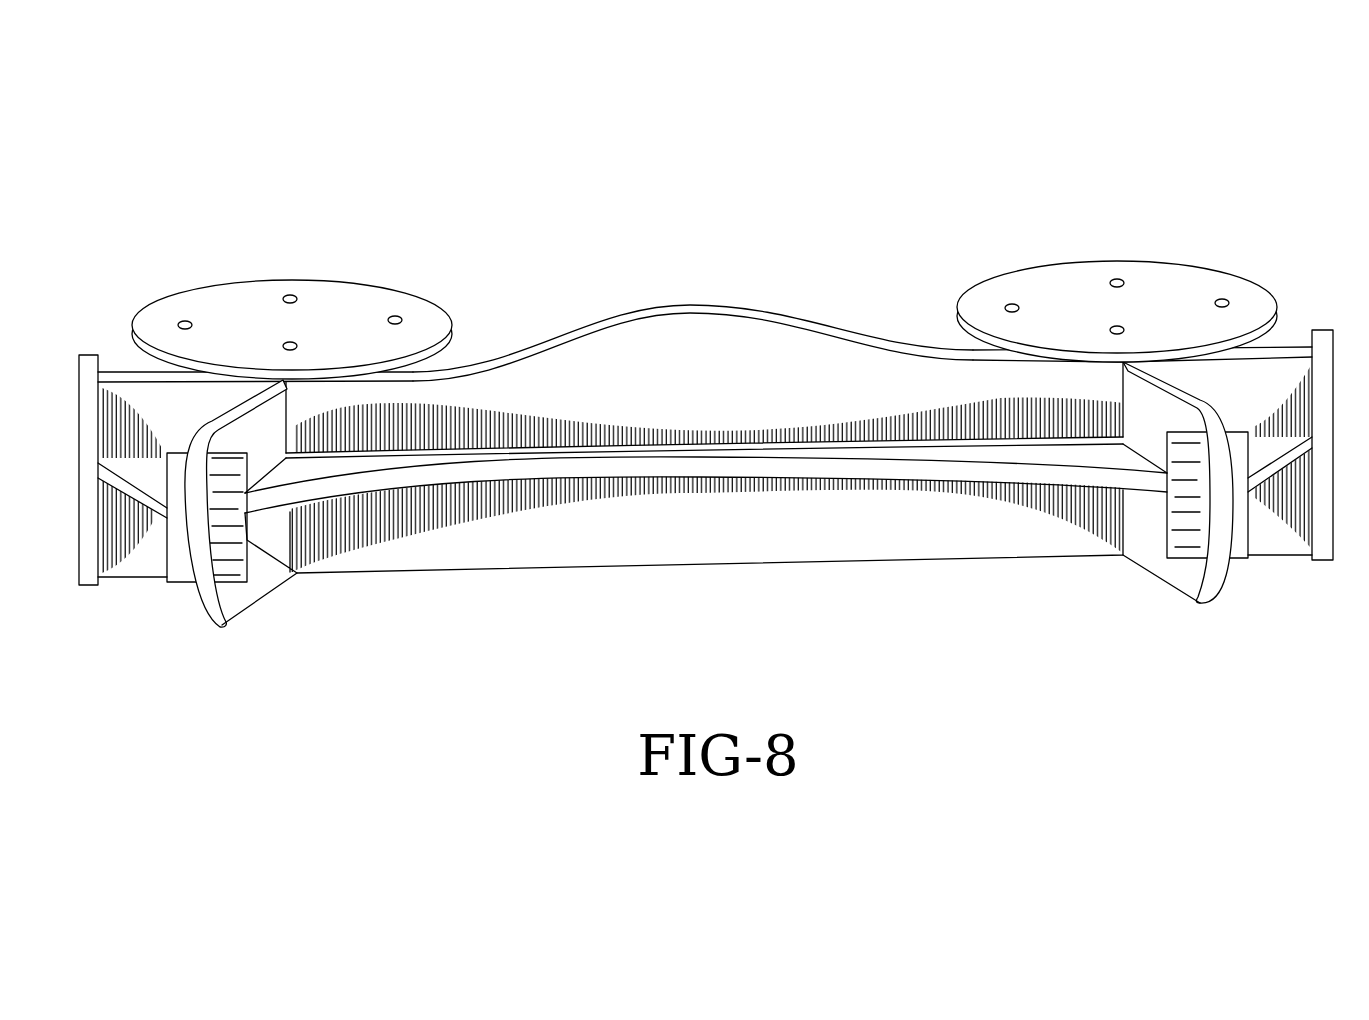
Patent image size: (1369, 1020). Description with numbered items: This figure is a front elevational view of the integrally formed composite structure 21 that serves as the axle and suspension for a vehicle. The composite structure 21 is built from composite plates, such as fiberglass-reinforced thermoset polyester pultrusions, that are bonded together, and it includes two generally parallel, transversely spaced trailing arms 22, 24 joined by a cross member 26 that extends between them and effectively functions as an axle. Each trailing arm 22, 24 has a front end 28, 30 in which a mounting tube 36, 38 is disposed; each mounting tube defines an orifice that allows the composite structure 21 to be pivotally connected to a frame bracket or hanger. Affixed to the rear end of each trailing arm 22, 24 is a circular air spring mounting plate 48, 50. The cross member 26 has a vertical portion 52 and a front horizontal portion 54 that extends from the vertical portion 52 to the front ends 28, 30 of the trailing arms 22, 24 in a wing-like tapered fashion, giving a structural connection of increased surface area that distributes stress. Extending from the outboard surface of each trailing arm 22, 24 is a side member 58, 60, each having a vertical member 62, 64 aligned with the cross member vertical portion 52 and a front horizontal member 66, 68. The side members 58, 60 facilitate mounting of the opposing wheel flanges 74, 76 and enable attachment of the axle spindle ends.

The composite structure 21 is at (707, 385).
The trailing arm 22 is at (218, 481).
The trailing arm 24 is at (1197, 462).
The cross member 26 is at (683, 488).
The front end 28 is at (192, 532).
The front end 30 is at (1222, 512).
The mounting tube 36 is at (247, 540).
The mounting tube 38 is at (1170, 520).
The air spring mounting plate 48 is at (340, 295).
The air spring mounting plate 50 is at (1062, 276).
The vertical portion 52 is at (710, 308).
The front horizontal portion 54 is at (1027, 470).
The side member 58 is at (148, 507).
The side member 60 is at (1270, 493).
The vertical member 62 is at (133, 385).
The vertical member 64 is at (1278, 362).
The front horizontal member 66 is at (137, 470).
The front horizontal member 68 is at (1278, 447).
The wheel flange 74 is at (90, 556).
The wheel flange 76 is at (1326, 530).